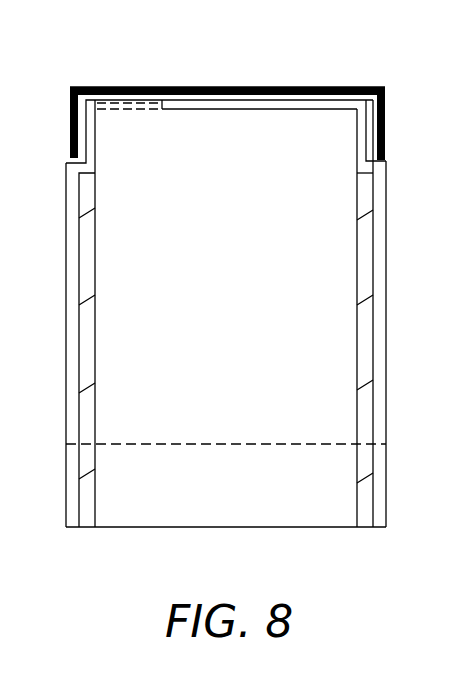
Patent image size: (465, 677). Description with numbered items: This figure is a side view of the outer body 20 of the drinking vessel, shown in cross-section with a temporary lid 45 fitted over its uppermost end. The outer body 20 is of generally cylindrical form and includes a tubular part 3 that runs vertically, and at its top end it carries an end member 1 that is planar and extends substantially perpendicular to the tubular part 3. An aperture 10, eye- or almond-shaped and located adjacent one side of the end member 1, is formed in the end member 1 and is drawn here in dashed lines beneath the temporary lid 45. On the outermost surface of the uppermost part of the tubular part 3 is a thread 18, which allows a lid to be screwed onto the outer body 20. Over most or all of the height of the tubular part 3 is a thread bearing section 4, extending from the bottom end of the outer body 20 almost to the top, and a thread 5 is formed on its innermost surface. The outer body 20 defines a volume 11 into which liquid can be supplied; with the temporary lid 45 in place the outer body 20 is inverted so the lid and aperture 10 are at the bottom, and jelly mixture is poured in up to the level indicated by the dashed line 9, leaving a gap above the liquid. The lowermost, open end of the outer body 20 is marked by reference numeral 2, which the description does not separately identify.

The outer body 20 is at (84, 88).
The temporary lid 45 is at (282, 86).
The end member 1 is at (226, 99).
The aperture 10 is at (126, 99).
The thread 18 is at (82, 116).
The tubular part 3 is at (380, 145).
The thread bearing section 4 is at (387, 237).
The container 2 is at (229, 529).
The volume 11 is at (120, 248).
The thread 5 is at (88, 340).
The dashed line 9 is at (283, 447).